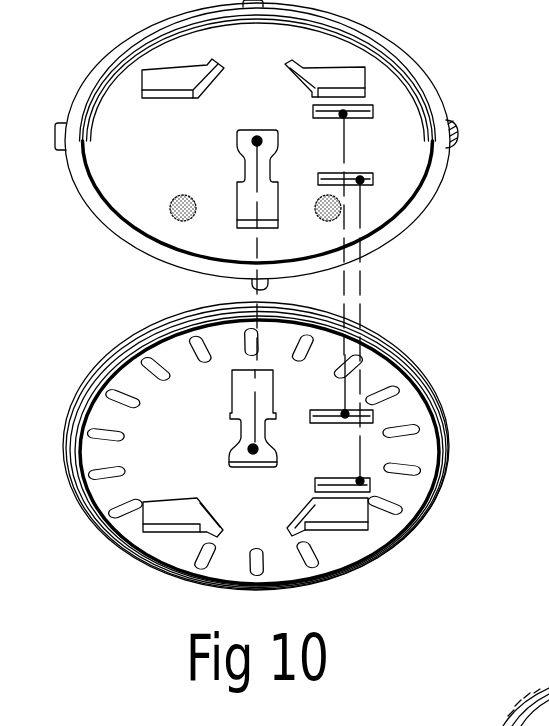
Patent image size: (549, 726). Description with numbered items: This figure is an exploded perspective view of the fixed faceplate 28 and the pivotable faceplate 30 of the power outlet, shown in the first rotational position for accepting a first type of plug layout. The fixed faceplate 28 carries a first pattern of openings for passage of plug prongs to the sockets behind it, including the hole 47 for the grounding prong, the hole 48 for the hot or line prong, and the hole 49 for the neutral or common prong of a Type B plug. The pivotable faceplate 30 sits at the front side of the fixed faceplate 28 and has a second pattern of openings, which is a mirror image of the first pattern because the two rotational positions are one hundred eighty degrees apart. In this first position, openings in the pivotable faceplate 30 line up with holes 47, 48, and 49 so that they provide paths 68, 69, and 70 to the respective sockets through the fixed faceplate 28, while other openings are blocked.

The fixed faceplate 28 is at (97, 218).
The pivotable faceplate 30 is at (115, 542).
The path 68 is at (253, 252).
The hole 47 is at (235, 425).
The path 69 is at (347, 147).
The path 70 is at (360, 283).
The hole 49 is at (322, 410).
The hole 48 is at (315, 482).